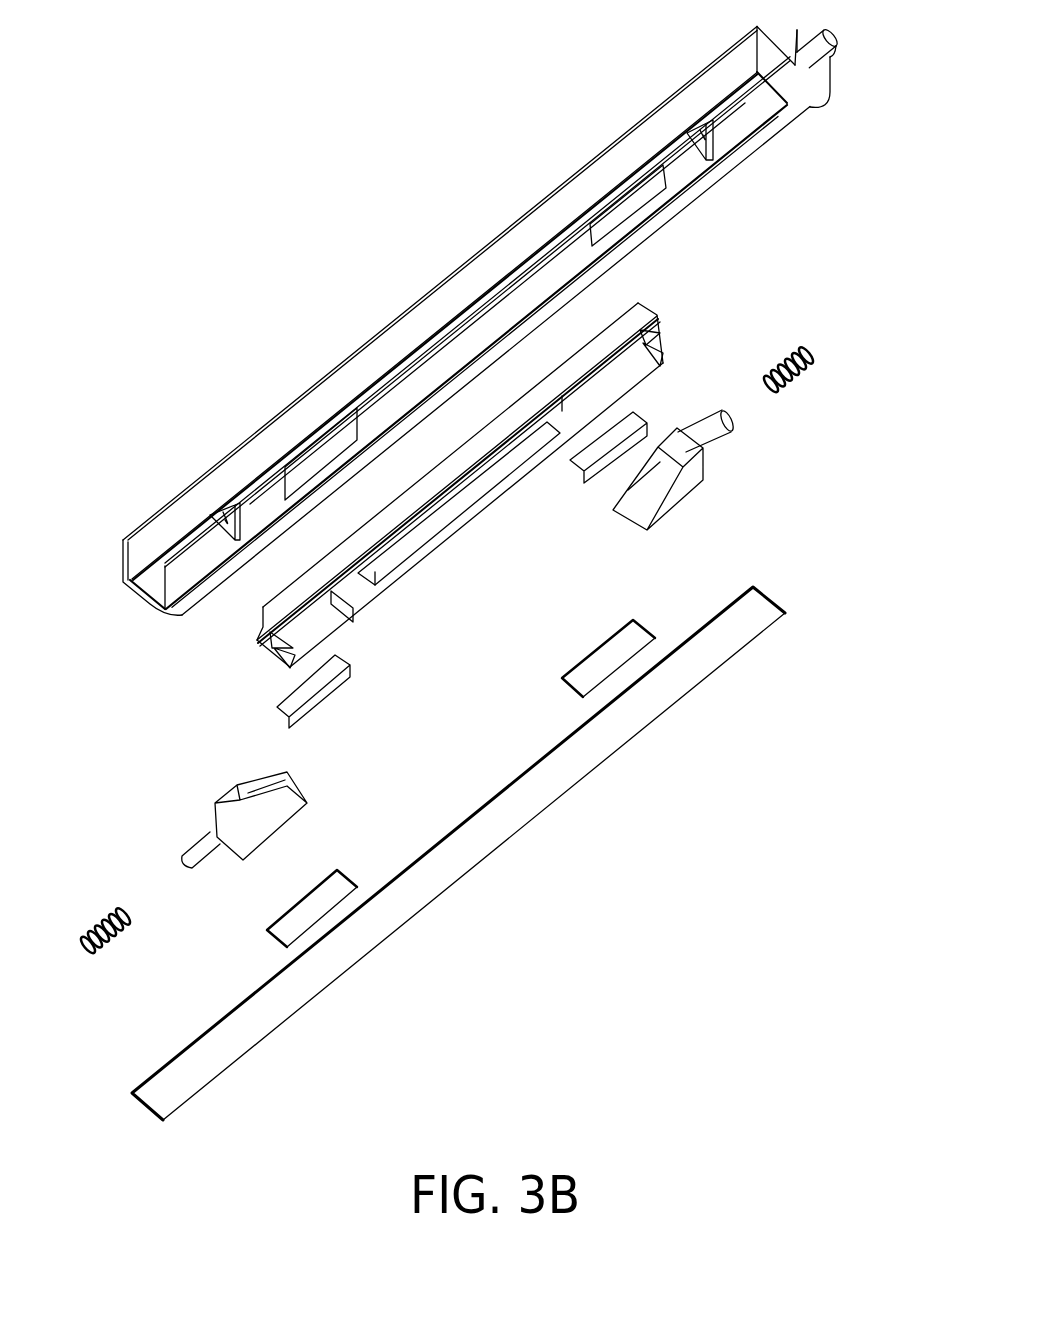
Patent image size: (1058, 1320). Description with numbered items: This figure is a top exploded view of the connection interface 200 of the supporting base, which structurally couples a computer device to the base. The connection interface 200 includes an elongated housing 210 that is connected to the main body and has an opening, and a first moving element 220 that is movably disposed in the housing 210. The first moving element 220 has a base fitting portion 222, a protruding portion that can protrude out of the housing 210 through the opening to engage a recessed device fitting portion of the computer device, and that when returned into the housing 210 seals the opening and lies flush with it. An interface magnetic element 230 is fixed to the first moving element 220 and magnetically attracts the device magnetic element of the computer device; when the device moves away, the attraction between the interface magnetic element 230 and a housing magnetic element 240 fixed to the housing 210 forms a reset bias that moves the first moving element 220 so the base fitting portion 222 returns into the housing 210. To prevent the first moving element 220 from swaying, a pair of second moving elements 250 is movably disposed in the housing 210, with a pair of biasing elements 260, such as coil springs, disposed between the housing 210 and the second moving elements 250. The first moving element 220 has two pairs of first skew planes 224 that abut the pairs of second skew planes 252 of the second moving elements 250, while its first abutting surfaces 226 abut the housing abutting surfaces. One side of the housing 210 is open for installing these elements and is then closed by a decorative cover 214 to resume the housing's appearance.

The connection interface 200 is at (304, 305).
The housing 210 is at (283, 422).
The decorative cover 214 is at (758, 632).
The first moving element 220 is at (668, 300).
The base fitting portion 222 is at (447, 471).
The first skew planes 224 is at (655, 334).
The first abutting surfaces 226 is at (541, 403).
The interface magnetic element 230 is at (575, 466).
The housing magnetic element 240 is at (645, 632).
The second moving elements 250 is at (672, 503).
The second skew planes 252 is at (644, 485).
The biasing elements 260 is at (800, 350).